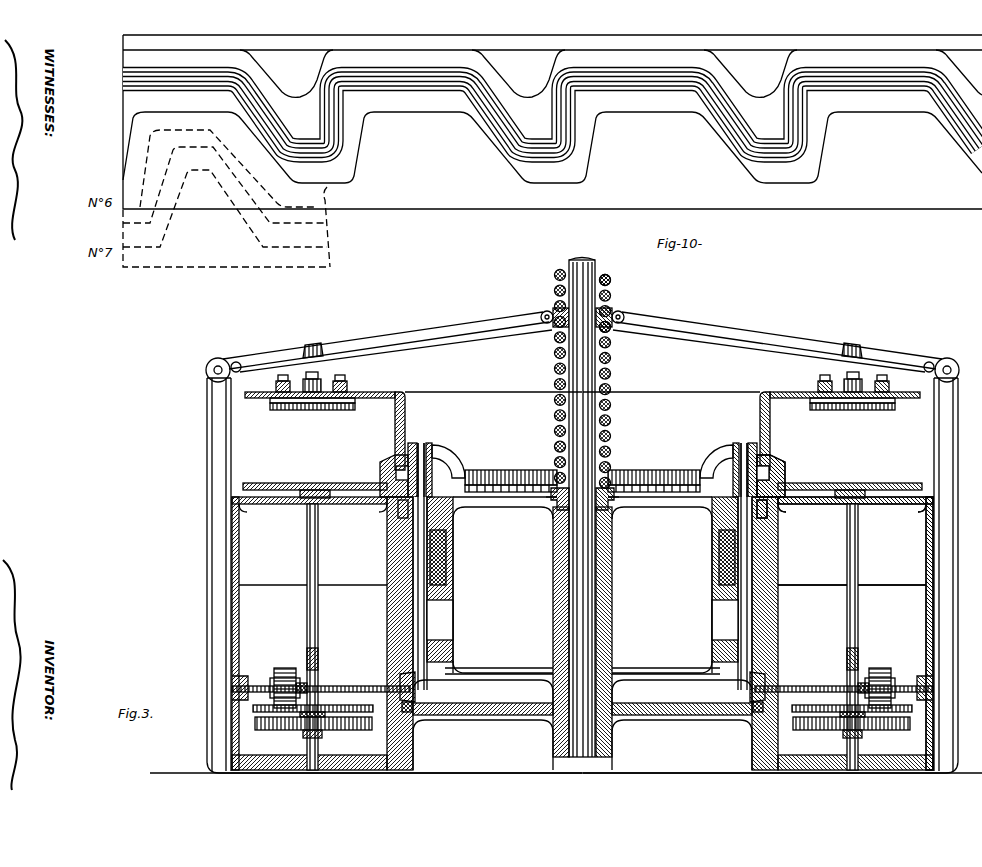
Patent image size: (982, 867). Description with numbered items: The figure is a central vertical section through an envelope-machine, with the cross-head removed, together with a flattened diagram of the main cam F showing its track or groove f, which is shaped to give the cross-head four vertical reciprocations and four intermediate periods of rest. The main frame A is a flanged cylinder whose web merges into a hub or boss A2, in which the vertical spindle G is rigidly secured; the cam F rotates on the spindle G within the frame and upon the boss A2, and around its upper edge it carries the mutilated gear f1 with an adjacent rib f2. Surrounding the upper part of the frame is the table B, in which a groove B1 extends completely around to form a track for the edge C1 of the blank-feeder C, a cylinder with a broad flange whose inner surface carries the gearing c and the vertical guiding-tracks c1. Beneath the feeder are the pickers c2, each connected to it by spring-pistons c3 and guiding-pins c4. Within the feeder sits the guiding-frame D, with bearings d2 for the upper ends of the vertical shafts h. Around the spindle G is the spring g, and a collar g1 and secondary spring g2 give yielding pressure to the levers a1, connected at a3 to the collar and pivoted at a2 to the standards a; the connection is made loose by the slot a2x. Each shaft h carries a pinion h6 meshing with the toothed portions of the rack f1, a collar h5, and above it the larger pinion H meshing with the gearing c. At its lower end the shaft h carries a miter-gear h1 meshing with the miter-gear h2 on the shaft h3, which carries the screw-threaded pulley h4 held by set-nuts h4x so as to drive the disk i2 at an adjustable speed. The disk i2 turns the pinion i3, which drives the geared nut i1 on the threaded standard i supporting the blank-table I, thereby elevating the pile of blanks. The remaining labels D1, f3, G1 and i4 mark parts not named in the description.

In FIG. 10, the track or groove f is at (552, 115).
In FIG. 3, the track or groove f is at (442, 603).
In FIG. 10, the main cam F is at (552, 116).
In FIG. 3, the main cam F is at (663, 590).
In FIG. 3, the standards a is at (231, 614).
In FIG. 3, the levers a1 is at (316, 347).
In FIG. 3, the pivotal connection a2 is at (587, 358).
In FIG. 3, the slot a2x is at (238, 362).
In FIG. 3, the connection to collar a3 is at (544, 312).
In FIG. 3, the main frame A is at (400, 612).
In FIG. 3, the hub or boss A2 is at (582, 691).
In FIG. 3, the table B is at (239, 552).
In FIG. 3, the groove B1 is at (786, 514).
In FIG. 3, the gearing c is at (386, 470).
In FIG. 3, the guiding-tracks c1 is at (561, 488).
In FIG. 3, the pickers c2 is at (312, 410).
In FIG. 3, the spring-pistons c3 is at (583, 375).
In FIG. 3, the guiding-pins c4 is at (586, 377).
In FIG. 3, the blank-feeder C is at (778, 418).
In FIG. 3, the edge of blank-feeder C1 is at (792, 480).
In FIG. 3, the guiding-frame D is at (455, 458).
In FIG. 3, the rack block D1 is at (548, 505).
In FIG. 3, the bearings d2 is at (432, 446).
In FIG. 3, the mutilated gear f1 is at (445, 503).
In FIG. 3, the rib f2 is at (495, 492).
In FIG. 3, the beam f3 is at (502, 660).
In FIG. 3, the spring g is at (610, 436).
In FIG. 3, the collar g1 is at (610, 329).
In FIG. 3, the secondary spring g2 is at (611, 280).
In FIG. 3, the vertical spindle G is at (582, 508).
In FIG. 3, the column sleeve G1 is at (552, 572).
In FIG. 3, the vertical shaft h is at (421, 443).
In FIG. 3, the miter-gear h1 is at (417, 680).
In FIG. 3, the miter-gear h2 is at (413, 706).
In FIG. 3, the shaft h3 is at (356, 686).
In FIG. 3, the pulley h4 is at (290, 668).
In FIG. 3, the set-nuts h4x is at (272, 668).
In FIG. 3, the collar h5 is at (398, 515).
In FIG. 3, the pinion h6 is at (400, 518).
In FIG. 3, the larger pinion H is at (393, 466).
In FIG. 3, the standard i is at (319, 550).
In FIG. 3, the geared nut i1 is at (373, 722).
In FIG. 3, the disk i2 is at (330, 706).
In FIG. 3, the pinion i3 is at (302, 734).
In FIG. 3, the bearing boss i4 is at (245, 678).
In FIG. 3, the blank-table I is at (283, 483).